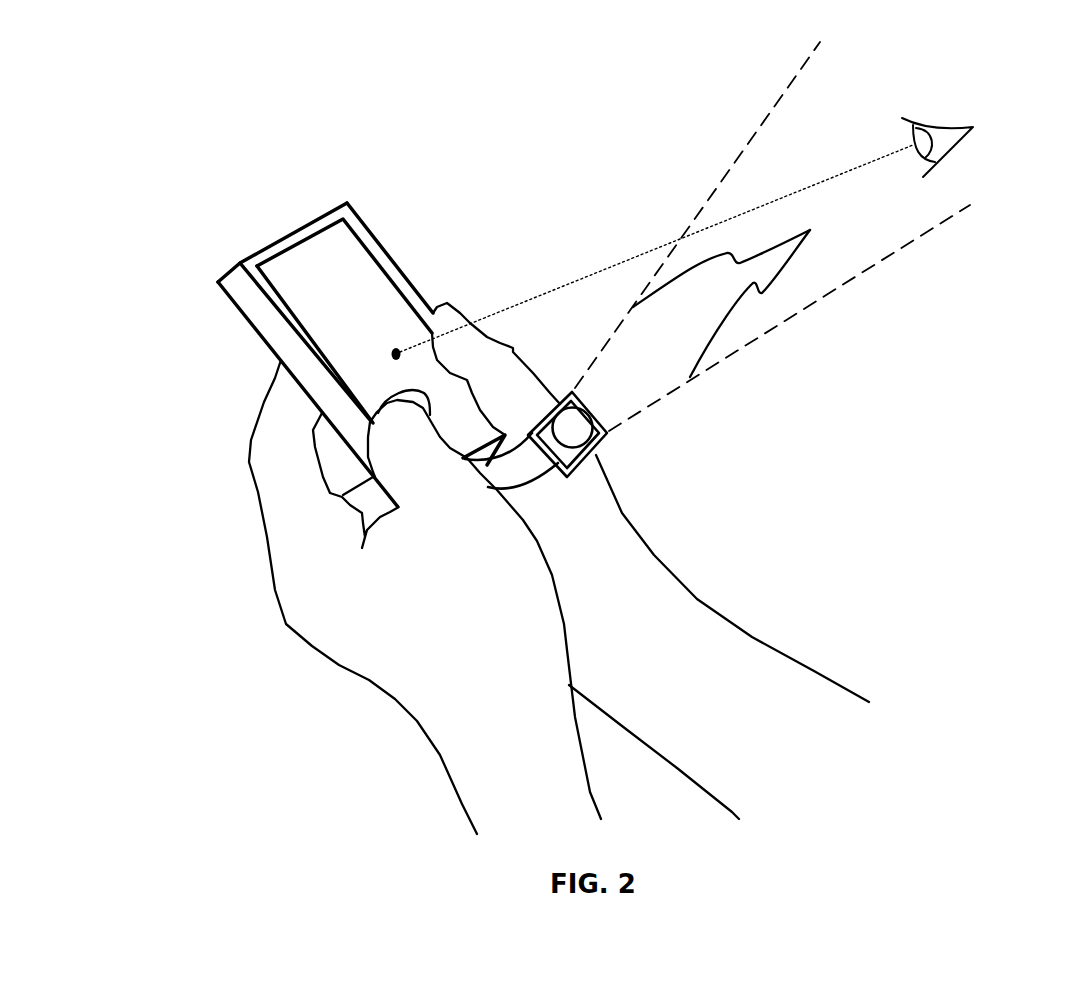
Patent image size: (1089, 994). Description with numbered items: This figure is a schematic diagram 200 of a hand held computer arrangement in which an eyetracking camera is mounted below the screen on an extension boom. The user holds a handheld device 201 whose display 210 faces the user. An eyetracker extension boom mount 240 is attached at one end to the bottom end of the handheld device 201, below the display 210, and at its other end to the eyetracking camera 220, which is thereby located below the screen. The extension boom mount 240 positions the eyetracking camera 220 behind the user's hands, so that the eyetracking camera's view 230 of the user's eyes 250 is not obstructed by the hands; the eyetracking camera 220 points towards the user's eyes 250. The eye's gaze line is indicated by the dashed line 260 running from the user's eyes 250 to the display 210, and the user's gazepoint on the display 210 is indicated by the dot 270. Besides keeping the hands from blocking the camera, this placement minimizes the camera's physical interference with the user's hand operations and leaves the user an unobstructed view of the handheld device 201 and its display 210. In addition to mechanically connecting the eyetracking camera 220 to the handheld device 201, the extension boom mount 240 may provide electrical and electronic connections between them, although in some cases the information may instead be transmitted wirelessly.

The schematic diagram 200 is at (462, 848).
The handheld device 201 is at (272, 247).
The display 210 is at (362, 270).
The eyetracking camera 220 is at (606, 434).
The eyetracking camera's view 230 is at (806, 237).
The eyetracker extension boom mount 240 is at (530, 484).
The user's eyes 250 is at (937, 158).
The gaze line 260 is at (562, 287).
The gazepoint 270 is at (392, 353).